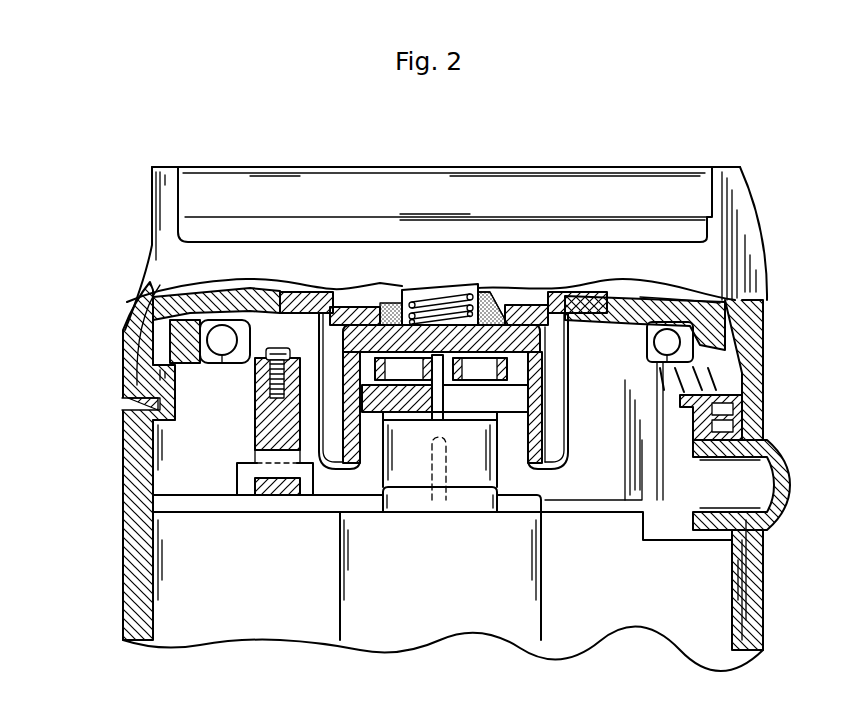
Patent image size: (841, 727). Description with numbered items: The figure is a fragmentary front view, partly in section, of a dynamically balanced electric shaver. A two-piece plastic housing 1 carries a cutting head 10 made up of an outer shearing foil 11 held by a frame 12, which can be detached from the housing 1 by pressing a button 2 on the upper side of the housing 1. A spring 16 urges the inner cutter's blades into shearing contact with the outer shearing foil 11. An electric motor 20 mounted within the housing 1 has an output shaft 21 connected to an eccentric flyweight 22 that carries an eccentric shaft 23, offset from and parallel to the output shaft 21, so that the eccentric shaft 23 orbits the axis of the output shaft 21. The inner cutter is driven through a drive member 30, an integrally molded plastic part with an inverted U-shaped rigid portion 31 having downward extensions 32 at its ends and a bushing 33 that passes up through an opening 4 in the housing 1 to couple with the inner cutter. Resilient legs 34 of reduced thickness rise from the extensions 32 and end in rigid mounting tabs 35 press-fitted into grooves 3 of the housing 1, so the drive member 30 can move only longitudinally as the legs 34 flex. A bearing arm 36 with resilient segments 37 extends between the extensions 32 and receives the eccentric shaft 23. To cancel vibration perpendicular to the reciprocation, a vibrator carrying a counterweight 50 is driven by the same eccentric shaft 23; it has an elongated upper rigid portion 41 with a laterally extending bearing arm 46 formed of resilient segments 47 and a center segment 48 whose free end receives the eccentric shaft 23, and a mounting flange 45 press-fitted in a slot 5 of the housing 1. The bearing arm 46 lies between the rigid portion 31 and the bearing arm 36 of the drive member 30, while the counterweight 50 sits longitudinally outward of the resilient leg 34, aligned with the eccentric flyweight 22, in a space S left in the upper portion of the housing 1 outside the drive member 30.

The housing 1 is at (122, 577).
The button 2 is at (791, 490).
The grooves 3 is at (280, 314).
The opening 4 is at (362, 350).
The slot 5 is at (302, 483).
The cutting head 10 is at (745, 156).
The outer shearing foil 11 is at (398, 167).
The frame 12 is at (762, 268).
The spring 16 is at (449, 318).
The electric motor 20 is at (437, 613).
The output shaft 21 is at (440, 500).
The eccentric flyweight 22 is at (447, 420).
The eccentric shaft 23 is at (455, 400).
The drive member 30 is at (553, 462).
The rigid portion 31 is at (380, 300).
The downward extensions 32 is at (545, 410).
The bushing 33 is at (484, 300).
The resilient legs 34 is at (320, 344).
The mounting tab 35 is at (290, 293).
The bearing arm 36 is at (375, 410).
The resilient segments 37 is at (402, 415).
The upper rigid portion 41 is at (322, 350).
The mounting flange 45 is at (262, 445).
The bearing arm 46 is at (512, 314).
The resilient segments 47 is at (377, 365).
The center segment 48 is at (432, 292).
The counterweight 50 is at (258, 406).
The space S is at (205, 412).